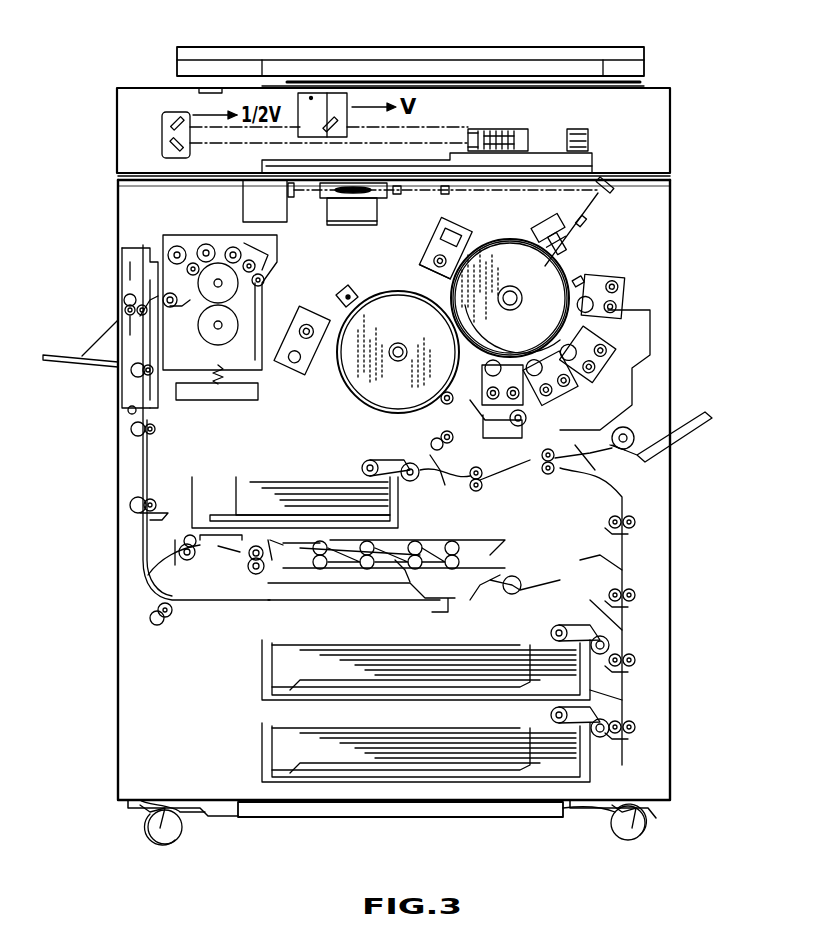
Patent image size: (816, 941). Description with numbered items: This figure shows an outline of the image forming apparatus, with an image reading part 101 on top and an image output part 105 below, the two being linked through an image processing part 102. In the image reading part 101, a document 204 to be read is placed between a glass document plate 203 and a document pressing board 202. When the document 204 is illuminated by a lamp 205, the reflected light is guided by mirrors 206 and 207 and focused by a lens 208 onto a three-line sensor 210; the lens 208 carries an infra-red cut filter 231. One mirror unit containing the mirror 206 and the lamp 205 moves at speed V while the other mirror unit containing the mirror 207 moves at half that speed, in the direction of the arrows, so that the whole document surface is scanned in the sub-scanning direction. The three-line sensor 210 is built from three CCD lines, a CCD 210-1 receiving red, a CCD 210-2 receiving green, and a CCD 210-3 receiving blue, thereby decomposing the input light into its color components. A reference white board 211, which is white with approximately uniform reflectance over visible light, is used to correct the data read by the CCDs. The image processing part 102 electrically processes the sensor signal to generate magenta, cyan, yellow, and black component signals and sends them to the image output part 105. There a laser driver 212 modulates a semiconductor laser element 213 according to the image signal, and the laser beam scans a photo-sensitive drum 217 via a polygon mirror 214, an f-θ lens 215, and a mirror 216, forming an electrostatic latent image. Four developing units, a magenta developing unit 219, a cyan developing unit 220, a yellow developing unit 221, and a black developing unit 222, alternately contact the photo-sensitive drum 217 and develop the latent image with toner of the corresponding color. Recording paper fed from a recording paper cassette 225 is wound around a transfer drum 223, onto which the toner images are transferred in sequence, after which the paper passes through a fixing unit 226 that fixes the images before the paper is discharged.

The image reading part 101 is at (656, 87).
The image processing part 102 is at (592, 162).
The image output part 105 is at (672, 318).
The document pressing board 202 is at (468, 48).
The glass document plate 203 is at (590, 62).
The document 204 is at (425, 83).
The lamp 205 is at (323, 93).
The mirror 206 is at (343, 124).
The mirror 207 is at (165, 131).
The lens 208 is at (498, 128).
The three-line sensor 210 is at (573, 128).
The CCD 210-1 is at (587, 129).
The CCD 210-2 is at (589, 139).
The CCD 210-3 is at (586, 145).
The reference white board 211 is at (215, 87).
The laser driver 212 is at (247, 202).
The semiconductor laser element 213 is at (292, 198).
The polygon mirror 214 is at (353, 199).
The f-θ lens 215 is at (448, 194).
The mirror 216 is at (610, 193).
The photo-sensitive drum 217 is at (560, 260).
The magenta developing unit 219 is at (515, 360).
The cyan developing unit 220 is at (563, 330).
The yellow developing unit 221 is at (563, 292).
The black developing unit 222 is at (441, 394).
The transfer drum 223 is at (363, 389).
The recording paper cassette 225 is at (280, 665).
The fixing unit 226 is at (215, 388).
The infra-red cut filter 231 is at (475, 130).